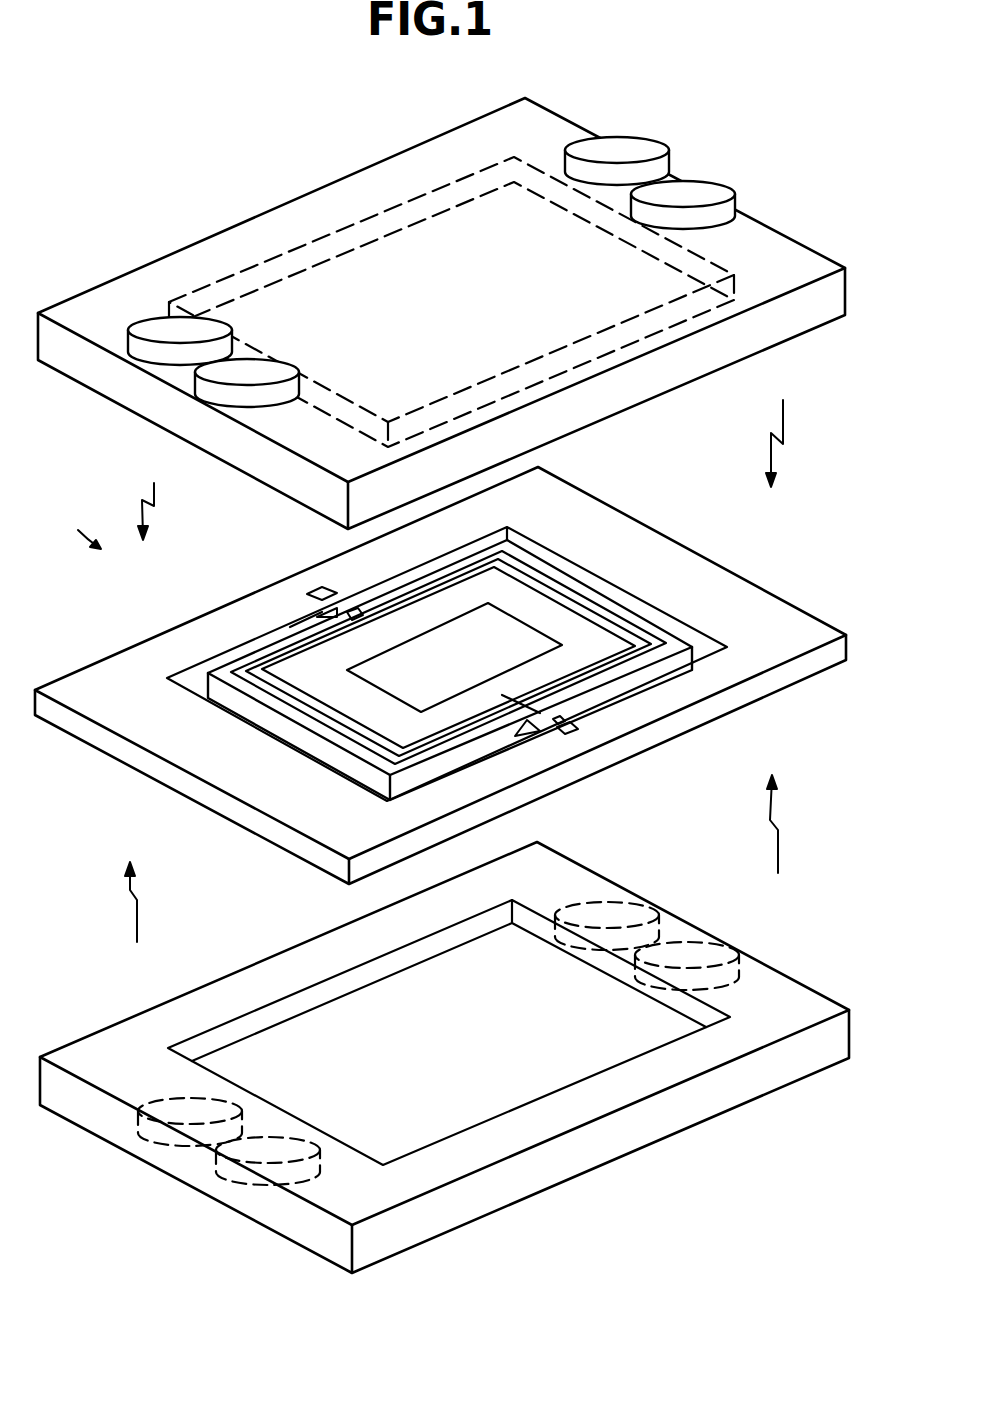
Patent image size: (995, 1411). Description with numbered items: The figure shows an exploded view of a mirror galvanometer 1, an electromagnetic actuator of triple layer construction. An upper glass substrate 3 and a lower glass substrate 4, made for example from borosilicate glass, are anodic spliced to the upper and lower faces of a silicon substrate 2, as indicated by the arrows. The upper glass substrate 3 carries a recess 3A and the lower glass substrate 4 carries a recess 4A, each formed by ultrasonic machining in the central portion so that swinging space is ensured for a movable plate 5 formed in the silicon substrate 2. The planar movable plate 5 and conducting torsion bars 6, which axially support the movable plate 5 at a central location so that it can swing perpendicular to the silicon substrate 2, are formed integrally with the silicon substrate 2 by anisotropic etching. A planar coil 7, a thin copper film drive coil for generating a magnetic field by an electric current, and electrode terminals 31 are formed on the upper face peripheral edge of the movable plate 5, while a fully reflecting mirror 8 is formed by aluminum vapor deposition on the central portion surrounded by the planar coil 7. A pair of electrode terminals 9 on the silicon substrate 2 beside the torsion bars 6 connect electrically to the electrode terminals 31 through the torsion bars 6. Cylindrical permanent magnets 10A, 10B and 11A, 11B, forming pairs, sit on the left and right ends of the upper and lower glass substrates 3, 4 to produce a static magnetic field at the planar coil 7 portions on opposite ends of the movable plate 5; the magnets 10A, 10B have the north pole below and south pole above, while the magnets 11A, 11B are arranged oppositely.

The mirror galvanometer 1 is at (826, 500).
The silicon substrate 2 is at (790, 622).
The upper glass substrate 3 is at (772, 246).
The recess 3A is at (641, 288).
The lower glass substrate 4 is at (806, 1000).
The recess 4A is at (675, 1035).
The movable plate 5 is at (342, 667).
The torsion bars 6 is at (325, 612).
The planar coil 7 is at (680, 617).
The fully reflecting mirror 8 is at (507, 628).
The electrode terminals 9 is at (328, 590).
The permanent magnet 10A is at (210, 399).
The permanent magnet 10B is at (225, 1160).
The permanent magnet 11A is at (665, 152).
The permanent magnet 11B is at (690, 948).
The electrode terminals 31 is at (350, 612).